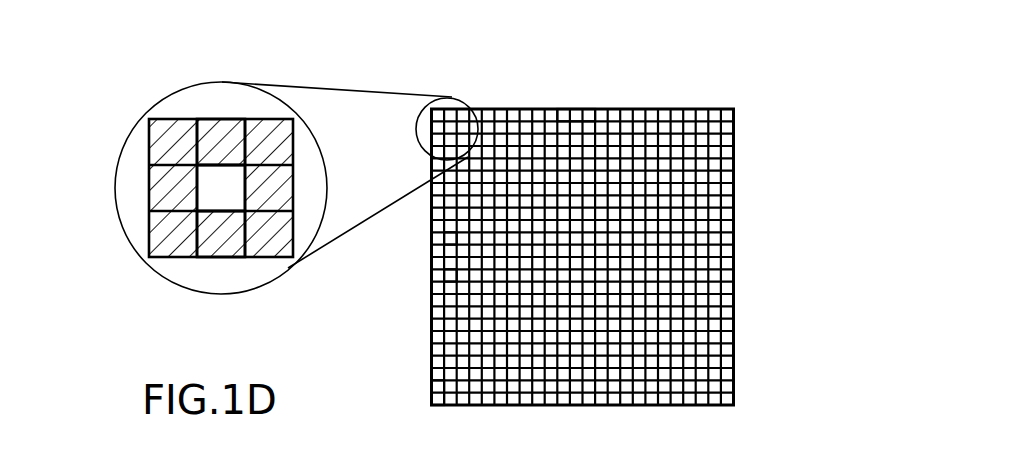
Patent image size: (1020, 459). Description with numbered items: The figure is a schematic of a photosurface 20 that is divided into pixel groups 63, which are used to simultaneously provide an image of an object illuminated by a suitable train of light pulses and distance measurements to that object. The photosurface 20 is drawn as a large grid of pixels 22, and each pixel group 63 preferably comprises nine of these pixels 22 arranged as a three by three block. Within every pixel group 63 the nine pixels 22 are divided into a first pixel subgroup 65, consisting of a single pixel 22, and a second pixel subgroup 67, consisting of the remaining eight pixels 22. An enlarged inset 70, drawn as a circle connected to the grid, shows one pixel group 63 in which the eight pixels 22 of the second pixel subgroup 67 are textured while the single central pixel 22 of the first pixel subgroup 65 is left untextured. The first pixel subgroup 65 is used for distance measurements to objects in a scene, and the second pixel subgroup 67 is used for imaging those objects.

The photosurface 20 is at (666, 86).
The pixel 22 is at (672, 118).
The pixel group 63 is at (212, 108).
The first pixel subgroup 65 is at (215, 182).
The second pixel subgroup 67 is at (220, 232).
The inset 70 is at (156, 90).